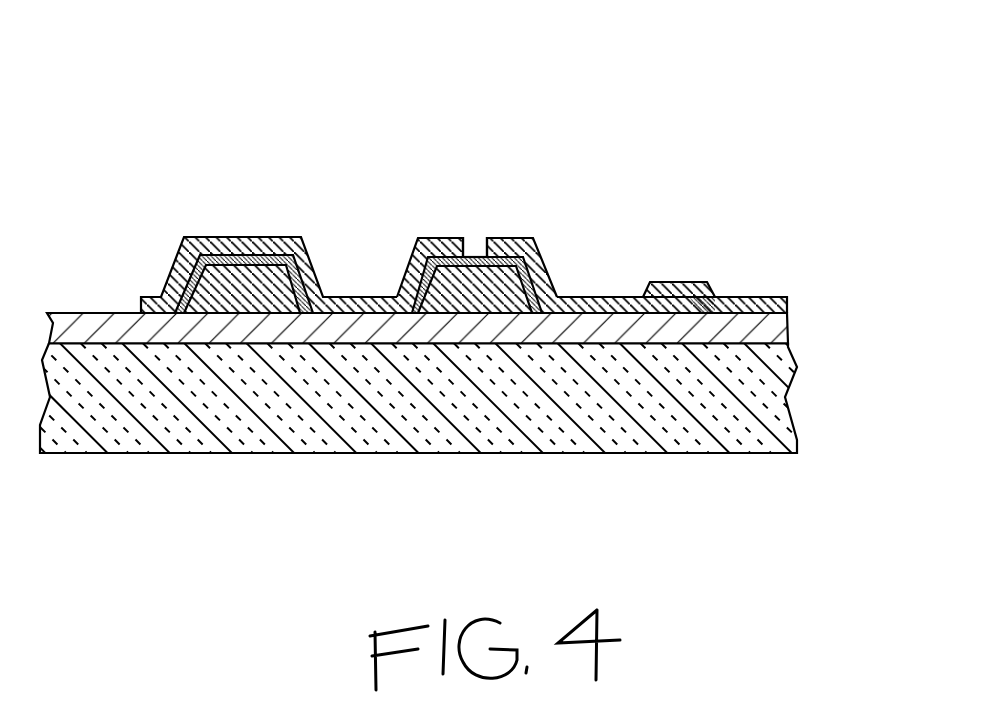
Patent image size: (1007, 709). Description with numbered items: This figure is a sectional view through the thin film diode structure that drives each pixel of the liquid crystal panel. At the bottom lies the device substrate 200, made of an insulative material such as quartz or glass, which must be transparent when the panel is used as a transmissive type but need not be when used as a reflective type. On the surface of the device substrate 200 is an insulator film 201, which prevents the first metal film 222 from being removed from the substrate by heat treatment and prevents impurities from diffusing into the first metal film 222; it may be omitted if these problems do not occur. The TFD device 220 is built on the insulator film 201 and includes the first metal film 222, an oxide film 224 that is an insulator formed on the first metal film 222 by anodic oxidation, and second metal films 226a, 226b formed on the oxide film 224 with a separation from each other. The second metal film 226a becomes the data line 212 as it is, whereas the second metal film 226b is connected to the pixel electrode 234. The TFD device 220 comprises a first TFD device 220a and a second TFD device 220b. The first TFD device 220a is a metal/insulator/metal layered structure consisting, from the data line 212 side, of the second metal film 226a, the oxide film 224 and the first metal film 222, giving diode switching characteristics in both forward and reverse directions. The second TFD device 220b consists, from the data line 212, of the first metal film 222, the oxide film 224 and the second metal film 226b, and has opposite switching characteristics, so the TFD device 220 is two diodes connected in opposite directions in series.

The device substrate 200 is at (770, 415).
The insulator film 201 is at (770, 332).
The data line 212 is at (245, 237).
The TFD device 220 is at (488, 278).
The first TFD device 220a is at (378, 208).
The second TFD device 220b is at (585, 208).
The first metal film 222 is at (474, 287).
The oxide film 224 is at (476, 256).
The second metal film 226a is at (438, 237).
The second metal film 226b is at (527, 238).
The pixel electrode 234 is at (753, 297).